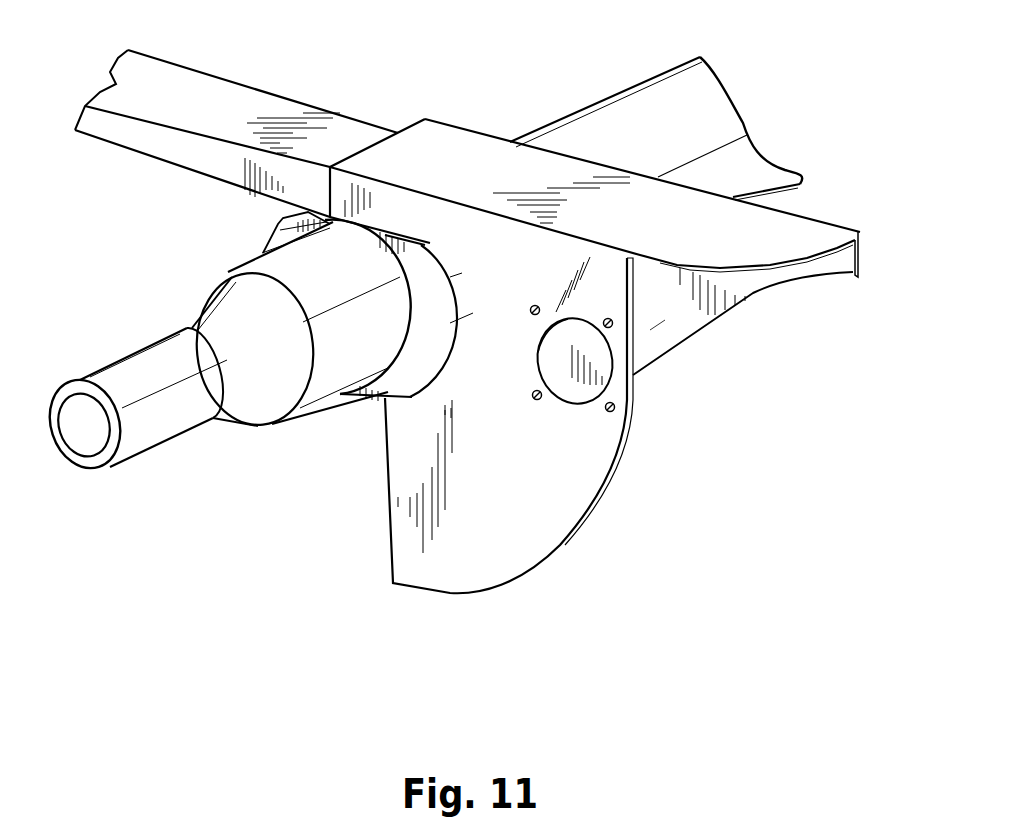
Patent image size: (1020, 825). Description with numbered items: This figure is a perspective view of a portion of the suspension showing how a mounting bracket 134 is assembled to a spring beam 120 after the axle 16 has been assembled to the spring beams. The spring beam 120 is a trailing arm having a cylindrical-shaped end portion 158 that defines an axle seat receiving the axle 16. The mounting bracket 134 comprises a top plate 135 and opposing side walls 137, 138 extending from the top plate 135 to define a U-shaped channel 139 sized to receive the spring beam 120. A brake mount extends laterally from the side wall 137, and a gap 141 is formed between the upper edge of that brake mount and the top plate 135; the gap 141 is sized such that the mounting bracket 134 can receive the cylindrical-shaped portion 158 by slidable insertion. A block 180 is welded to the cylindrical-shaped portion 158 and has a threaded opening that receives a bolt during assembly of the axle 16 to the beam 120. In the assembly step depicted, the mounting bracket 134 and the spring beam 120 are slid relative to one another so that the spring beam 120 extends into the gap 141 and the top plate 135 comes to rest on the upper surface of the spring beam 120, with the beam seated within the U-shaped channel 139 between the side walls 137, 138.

The axle 16 is at (123, 348).
The spring beam 120 is at (260, 85).
The mounting bracket 134 is at (458, 126).
The top plate 135 is at (707, 212).
The side wall 137 is at (625, 457).
The side wall 138 is at (710, 323).
The U-shaped channel 139 is at (673, 309).
The gap 141 is at (472, 340).
The cylindrical-shaped end portion 158 is at (345, 400).
The block 180 is at (265, 232).